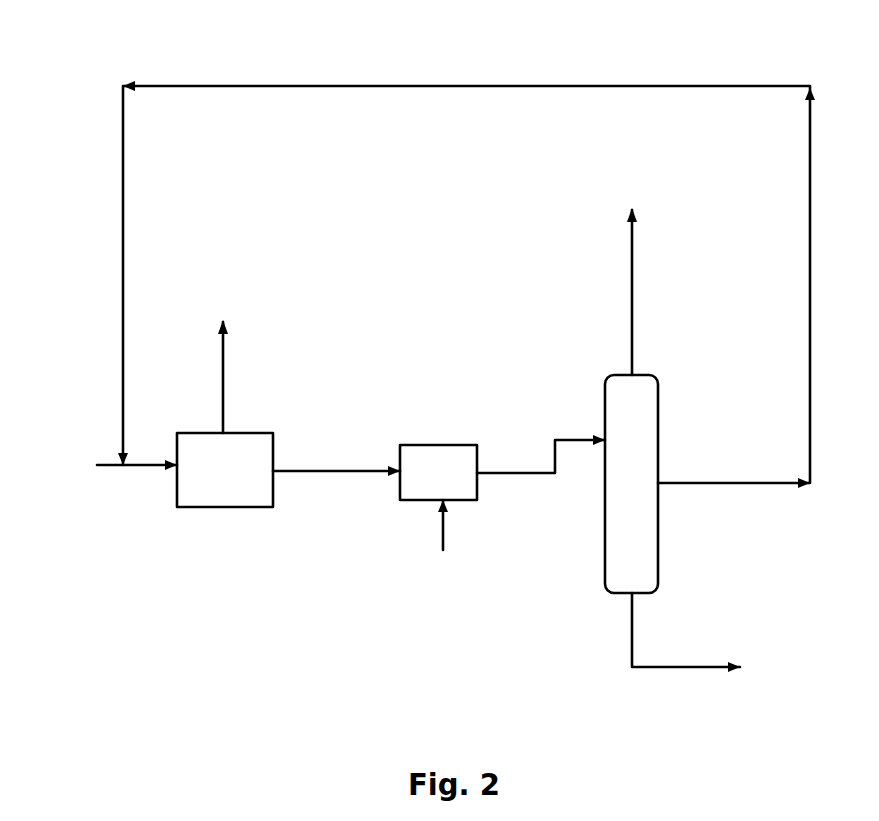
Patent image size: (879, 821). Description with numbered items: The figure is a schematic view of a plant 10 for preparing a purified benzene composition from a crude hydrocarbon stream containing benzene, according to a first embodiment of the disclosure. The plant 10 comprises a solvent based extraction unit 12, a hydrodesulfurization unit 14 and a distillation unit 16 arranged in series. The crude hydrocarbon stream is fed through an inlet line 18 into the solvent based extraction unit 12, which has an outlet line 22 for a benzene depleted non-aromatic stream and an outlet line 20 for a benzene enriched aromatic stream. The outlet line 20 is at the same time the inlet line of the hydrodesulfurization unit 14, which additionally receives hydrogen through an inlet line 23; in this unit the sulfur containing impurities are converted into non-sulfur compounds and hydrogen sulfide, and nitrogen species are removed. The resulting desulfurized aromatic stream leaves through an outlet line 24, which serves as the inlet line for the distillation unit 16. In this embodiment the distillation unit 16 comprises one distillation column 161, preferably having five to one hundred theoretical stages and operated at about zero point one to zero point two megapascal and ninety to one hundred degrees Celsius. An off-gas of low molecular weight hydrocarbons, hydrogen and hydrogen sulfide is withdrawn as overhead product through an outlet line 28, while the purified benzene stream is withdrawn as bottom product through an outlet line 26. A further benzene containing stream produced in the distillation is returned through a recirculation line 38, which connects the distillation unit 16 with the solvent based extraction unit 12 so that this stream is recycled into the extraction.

The plant 10 is at (168, 663).
The solvent based extraction unit 12 is at (225, 490).
The hydrodesulfurization unit 14 is at (453, 458).
The distillation unit 16 is at (580, 580).
The distillation column 161 is at (659, 533).
The inlet line 18 is at (107, 466).
The outlet line for benzene enriched aromatic stream 20 is at (340, 476).
The outlet line for benzene depleted non-aromatic stream 22 is at (226, 368).
The inlet line for hydrogen 23 is at (443, 530).
The outlet line for desulfurized aromatic stream 24 is at (517, 475).
The outlet line for purified benzene stream 26 is at (687, 670).
The outlet line for off-gas 28 is at (634, 277).
The recirculation line 38 is at (458, 82).